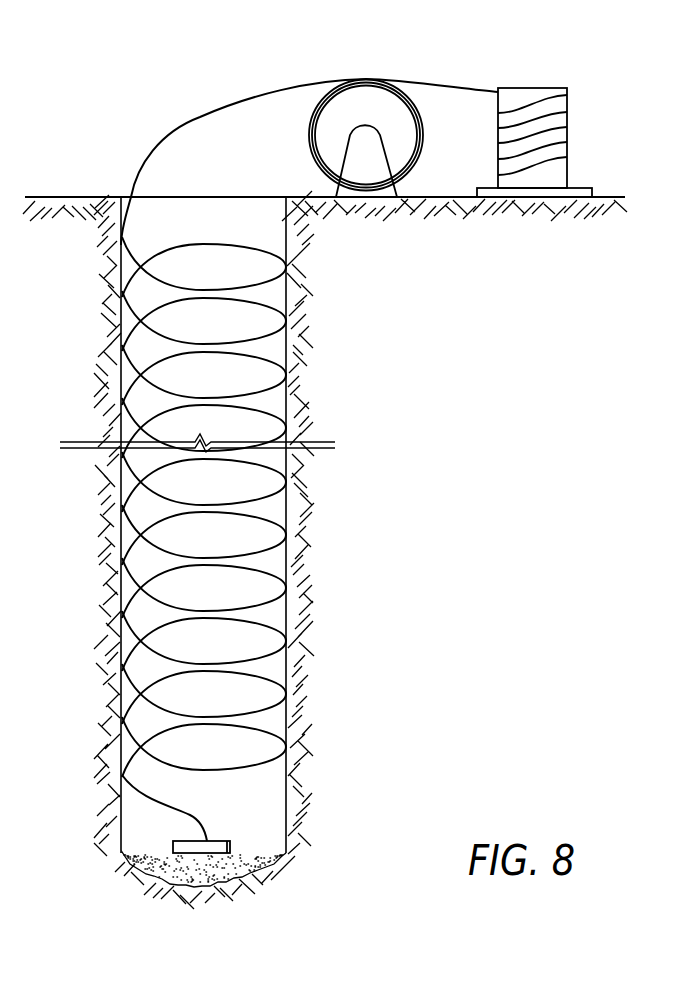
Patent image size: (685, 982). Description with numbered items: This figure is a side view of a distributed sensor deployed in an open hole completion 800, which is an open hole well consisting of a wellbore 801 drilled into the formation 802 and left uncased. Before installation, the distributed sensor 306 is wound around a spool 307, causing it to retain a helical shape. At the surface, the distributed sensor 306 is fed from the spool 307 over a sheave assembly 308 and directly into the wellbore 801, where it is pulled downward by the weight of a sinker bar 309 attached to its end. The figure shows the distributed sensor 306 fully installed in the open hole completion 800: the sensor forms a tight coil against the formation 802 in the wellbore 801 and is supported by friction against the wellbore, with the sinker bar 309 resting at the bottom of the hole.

The open hole completion 800 is at (150, 120).
The wellbore 801 is at (330, 533).
The formation 802 is at (376, 614).
The distributed sensor 306 is at (244, 112).
The spool 307 is at (525, 97).
The sheave assembly 308 is at (358, 103).
The sinker bar 309 is at (229, 840).